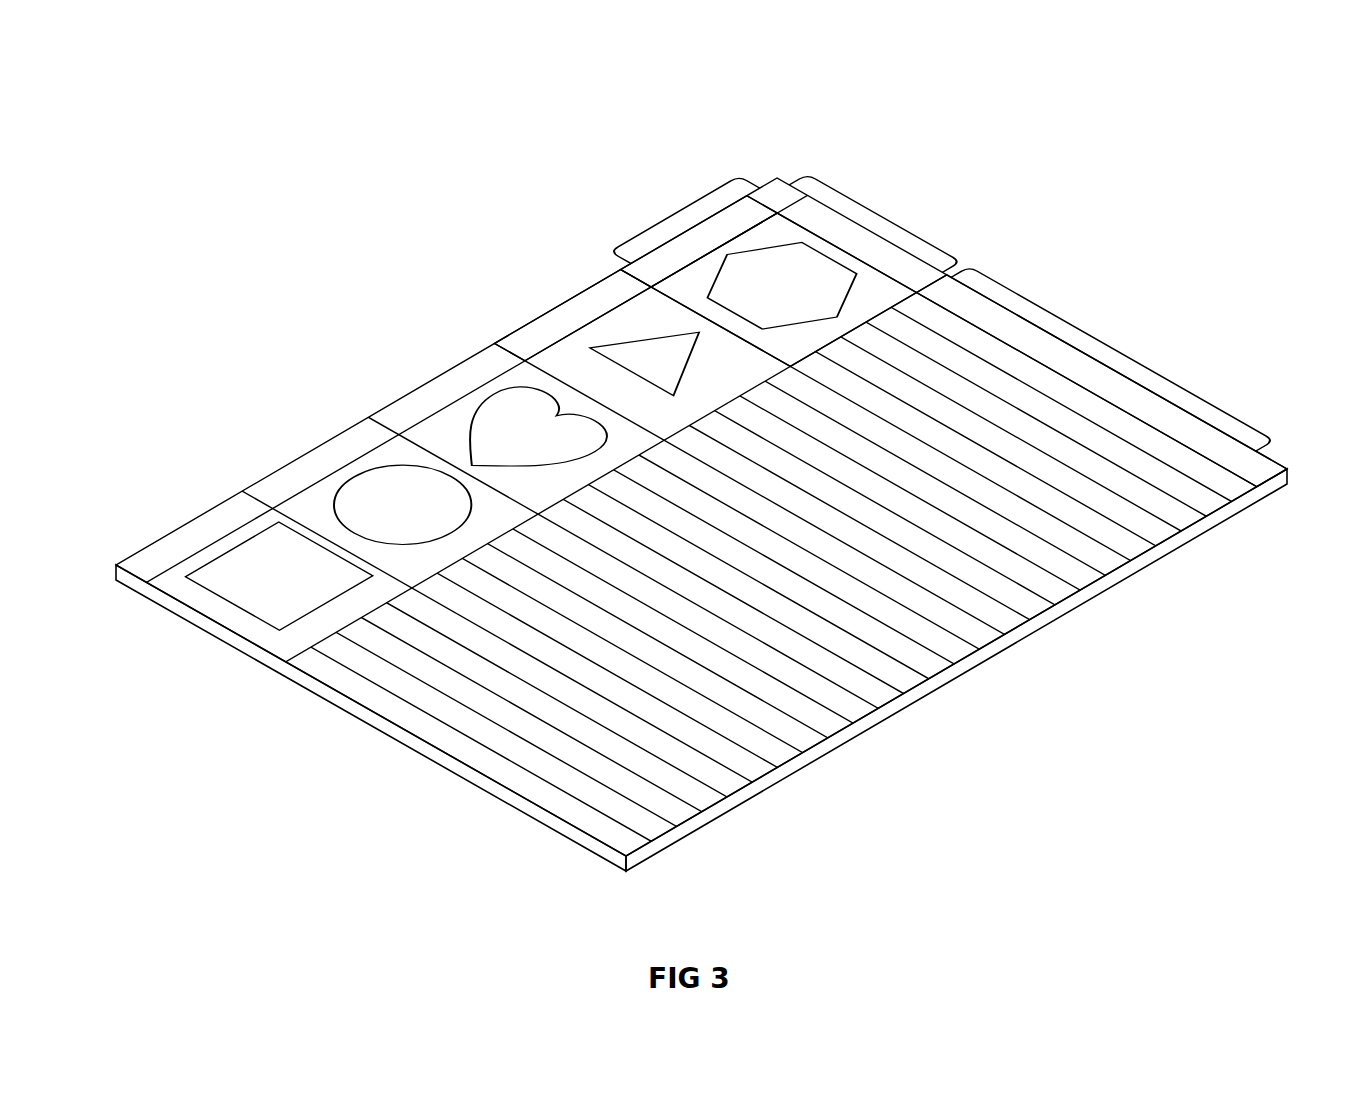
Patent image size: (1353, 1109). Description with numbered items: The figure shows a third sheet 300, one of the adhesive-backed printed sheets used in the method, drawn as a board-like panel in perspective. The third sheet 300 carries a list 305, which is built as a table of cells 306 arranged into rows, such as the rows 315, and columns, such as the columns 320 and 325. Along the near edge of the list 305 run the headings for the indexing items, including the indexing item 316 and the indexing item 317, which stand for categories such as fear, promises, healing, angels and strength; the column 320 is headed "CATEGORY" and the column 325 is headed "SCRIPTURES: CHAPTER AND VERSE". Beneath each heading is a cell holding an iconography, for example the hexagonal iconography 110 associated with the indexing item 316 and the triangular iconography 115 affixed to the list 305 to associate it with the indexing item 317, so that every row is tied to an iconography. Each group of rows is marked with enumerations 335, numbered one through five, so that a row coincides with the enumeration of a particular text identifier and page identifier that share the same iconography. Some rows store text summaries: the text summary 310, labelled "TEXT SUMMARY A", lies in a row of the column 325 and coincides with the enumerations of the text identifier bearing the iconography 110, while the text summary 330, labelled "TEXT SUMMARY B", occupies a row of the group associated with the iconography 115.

The third sheet 300 is at (224, 190).
The list 305 is at (782, 798).
The cells 306 is at (765, 226).
The text summary 310 is at (1224, 485).
The rows 315 is at (671, 219).
The indexing item 316 is at (739, 209).
The indexing item 317 is at (551, 292).
The column 320 is at (871, 216).
The column 325 is at (1124, 343).
The text summary 330 is at (1098, 558).
The enumerations 335 is at (284, 660).
The iconography 110 is at (819, 301).
The iconography 115 is at (682, 368).